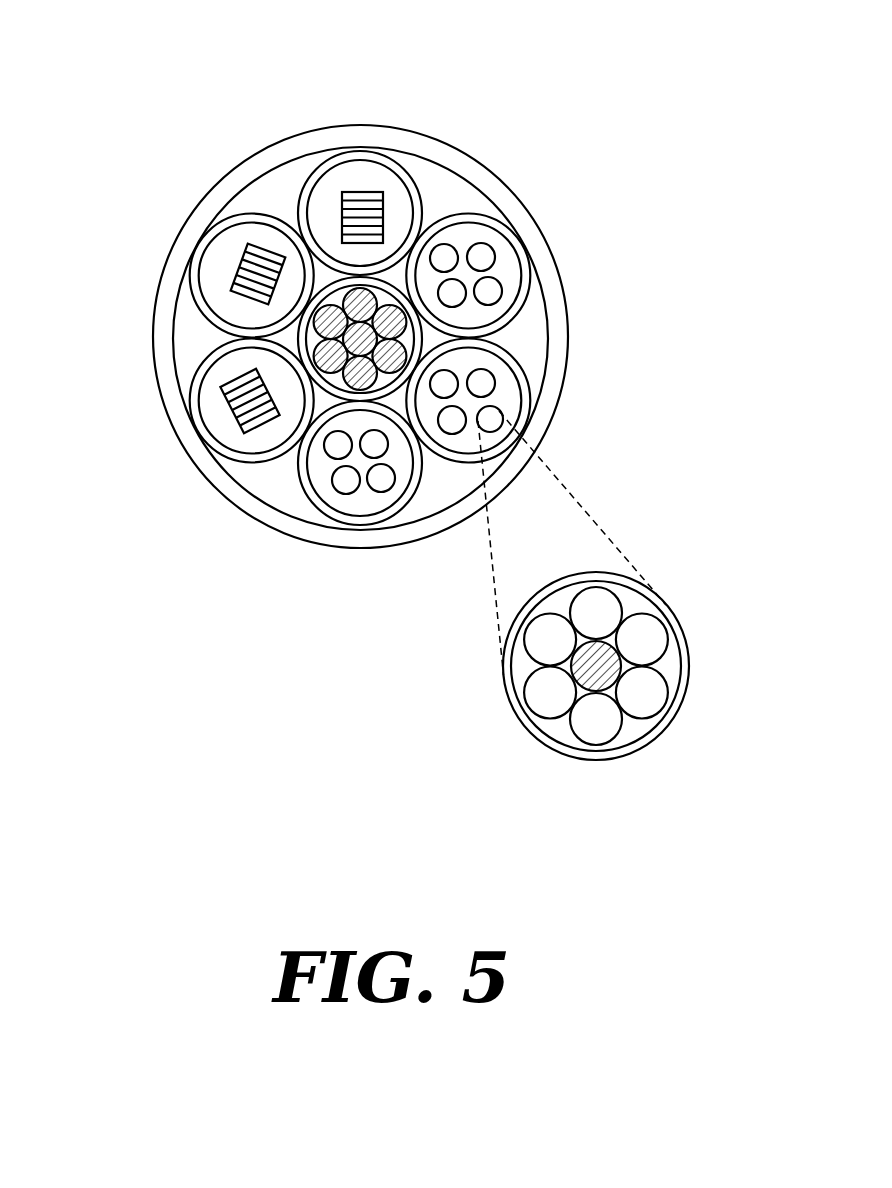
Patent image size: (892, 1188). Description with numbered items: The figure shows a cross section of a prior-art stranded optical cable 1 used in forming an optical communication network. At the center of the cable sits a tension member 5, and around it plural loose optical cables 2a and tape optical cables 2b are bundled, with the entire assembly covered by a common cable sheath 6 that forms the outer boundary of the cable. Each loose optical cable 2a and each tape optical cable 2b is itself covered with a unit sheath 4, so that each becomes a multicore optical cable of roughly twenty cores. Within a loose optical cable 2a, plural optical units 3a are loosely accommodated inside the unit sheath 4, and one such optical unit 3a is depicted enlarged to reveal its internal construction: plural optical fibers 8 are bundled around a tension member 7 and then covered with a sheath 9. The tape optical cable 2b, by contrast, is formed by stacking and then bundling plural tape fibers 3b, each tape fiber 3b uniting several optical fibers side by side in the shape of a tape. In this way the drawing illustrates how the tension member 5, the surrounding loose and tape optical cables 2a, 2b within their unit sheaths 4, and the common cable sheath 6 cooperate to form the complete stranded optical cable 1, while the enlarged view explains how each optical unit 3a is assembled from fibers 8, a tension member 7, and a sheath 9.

The stranded optical cable 1 is at (538, 202).
The loose optical cable 2a is at (528, 378).
The tape optical cable 2b is at (218, 455).
The optical unit 3a is at (495, 420).
The tape fiber 3b is at (233, 410).
The unit sheath 4 is at (455, 460).
The tension member 5 is at (323, 320).
The cable sheath 6 is at (288, 151).
The tension member 7 is at (578, 673).
The optical fiber 8 is at (598, 730).
The sheath 9 is at (654, 736).